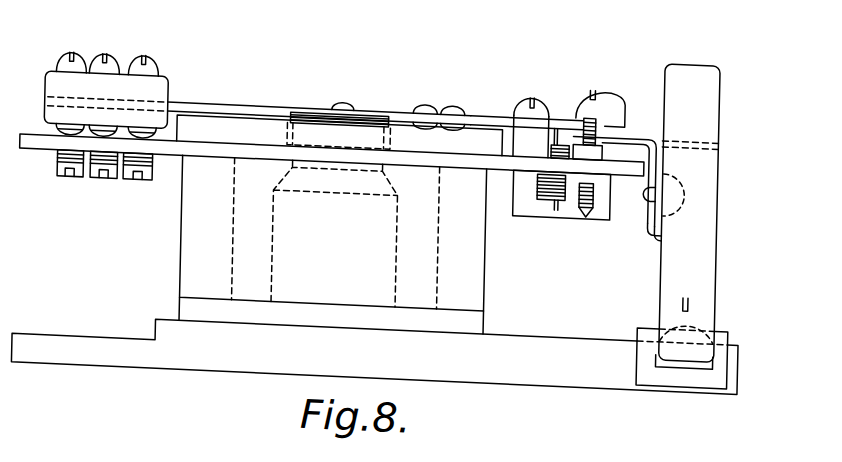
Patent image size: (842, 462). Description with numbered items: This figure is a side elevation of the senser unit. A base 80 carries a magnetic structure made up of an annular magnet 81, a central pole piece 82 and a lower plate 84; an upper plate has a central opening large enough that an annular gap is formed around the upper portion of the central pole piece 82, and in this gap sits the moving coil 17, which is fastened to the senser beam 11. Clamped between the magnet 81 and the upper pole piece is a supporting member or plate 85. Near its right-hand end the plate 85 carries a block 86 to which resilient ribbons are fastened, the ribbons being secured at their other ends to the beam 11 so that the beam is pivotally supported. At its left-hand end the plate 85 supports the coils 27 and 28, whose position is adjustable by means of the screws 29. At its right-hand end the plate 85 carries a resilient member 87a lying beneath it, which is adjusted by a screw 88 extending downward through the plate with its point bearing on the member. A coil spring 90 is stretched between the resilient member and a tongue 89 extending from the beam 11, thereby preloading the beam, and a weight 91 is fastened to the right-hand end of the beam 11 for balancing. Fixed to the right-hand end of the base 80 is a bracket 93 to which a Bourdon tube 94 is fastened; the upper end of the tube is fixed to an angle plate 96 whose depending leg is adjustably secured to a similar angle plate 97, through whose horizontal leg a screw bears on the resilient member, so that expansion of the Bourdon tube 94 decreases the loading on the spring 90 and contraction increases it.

The senser beam 11 is at (284, 60).
The moving coil 17 is at (362, 99).
The coil 27 is at (167, 75).
The coil 28 is at (38, 116).
The screws 29 is at (58, 158).
The base 80 is at (600, 351).
The annular magnet 81 is at (488, 231).
The central pole piece 82 is at (274, 216).
The lower plate 84 is at (184, 300).
The supporting member 85 is at (172, 145).
The block 86 is at (518, 116).
The resilient member 87a is at (603, 196).
The screw 88 is at (599, 171).
The tongue 89 is at (488, 92).
The coil spring 90 is at (560, 174).
The weight 91 is at (616, 75).
The bracket 93 is at (731, 303).
The Bourdon tube 94 is at (718, 181).
The angle plate 96 is at (719, 115).
The angle plate 97 is at (650, 212).